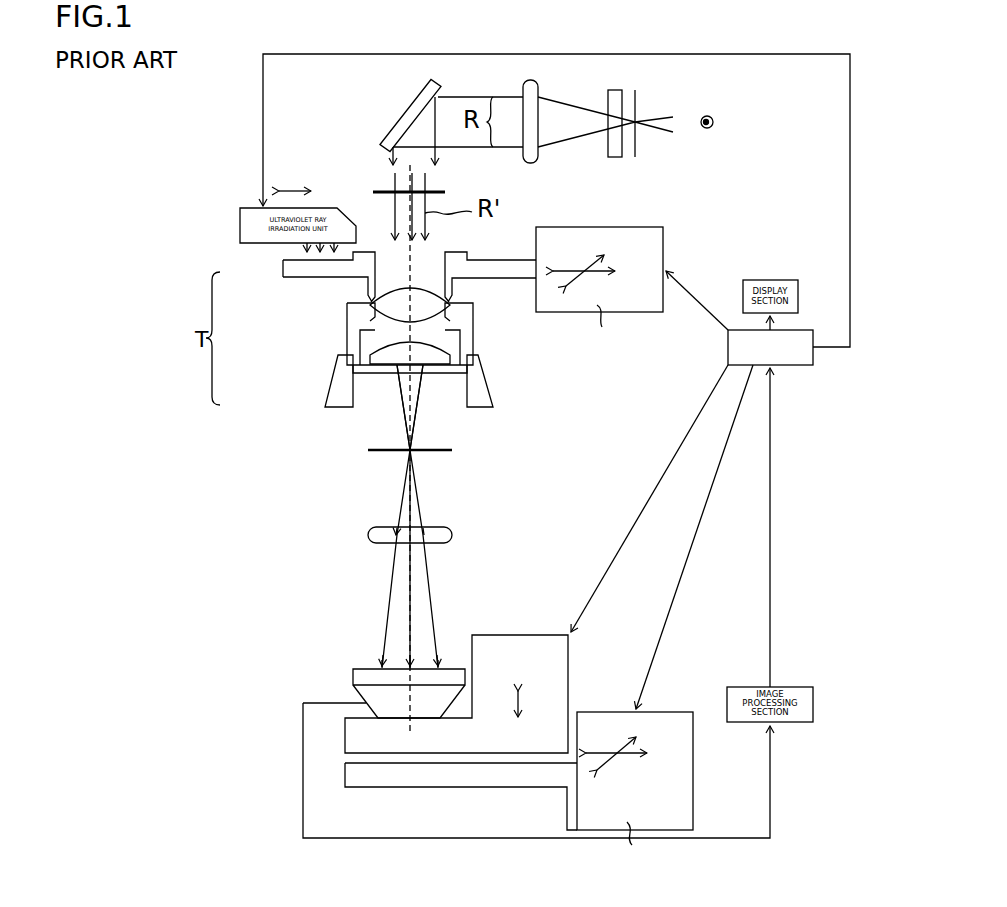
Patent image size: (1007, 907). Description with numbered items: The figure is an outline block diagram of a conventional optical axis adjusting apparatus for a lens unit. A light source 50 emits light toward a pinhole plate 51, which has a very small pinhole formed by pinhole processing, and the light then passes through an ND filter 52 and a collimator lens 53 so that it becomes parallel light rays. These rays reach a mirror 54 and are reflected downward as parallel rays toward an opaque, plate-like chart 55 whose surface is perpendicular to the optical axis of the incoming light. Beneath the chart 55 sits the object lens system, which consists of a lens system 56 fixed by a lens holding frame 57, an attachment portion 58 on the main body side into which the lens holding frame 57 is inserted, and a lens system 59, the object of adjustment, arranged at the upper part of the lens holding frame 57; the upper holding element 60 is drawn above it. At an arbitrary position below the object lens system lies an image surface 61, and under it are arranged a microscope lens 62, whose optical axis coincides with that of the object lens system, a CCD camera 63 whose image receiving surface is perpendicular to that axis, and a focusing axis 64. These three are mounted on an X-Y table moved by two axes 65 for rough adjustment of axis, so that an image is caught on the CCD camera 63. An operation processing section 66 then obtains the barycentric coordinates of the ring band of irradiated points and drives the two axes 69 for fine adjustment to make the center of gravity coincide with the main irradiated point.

The light source 50 is at (700, 128).
The pinhole plate 51 is at (640, 113).
The ND filter 52 is at (608, 103).
The collimator lens 53 is at (527, 88).
The mirror 54 is at (403, 121).
The chart 55 is at (387, 190).
The lens system 56 is at (390, 352).
The lens holding frame 57 is at (352, 327).
The attachment portion 58 is at (342, 387).
The lens system 59 is at (384, 303).
The upper lens holder 60 is at (372, 284).
The image surface 61 is at (368, 449).
The microscope lens 62 is at (368, 537).
The CCD camera 63 is at (353, 677).
The focusing axis 64 is at (495, 641).
The two axes for rough adjustment of axis 65 is at (573, 820).
The operation processing section 66 is at (793, 367).
The two axes for fine adjustment 69 is at (653, 250).